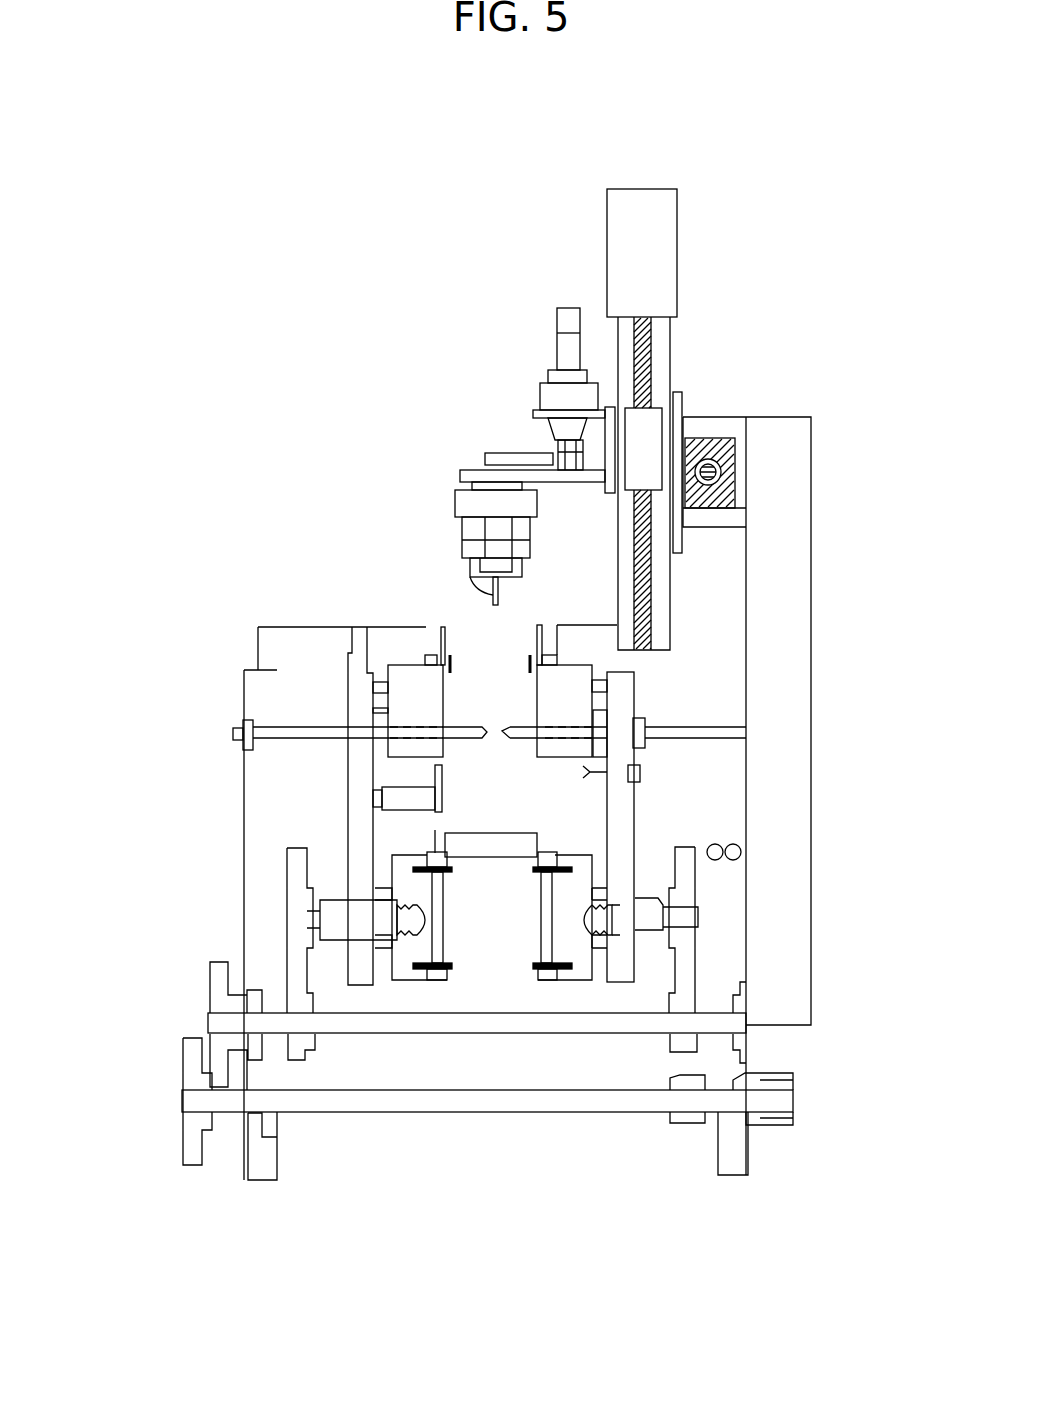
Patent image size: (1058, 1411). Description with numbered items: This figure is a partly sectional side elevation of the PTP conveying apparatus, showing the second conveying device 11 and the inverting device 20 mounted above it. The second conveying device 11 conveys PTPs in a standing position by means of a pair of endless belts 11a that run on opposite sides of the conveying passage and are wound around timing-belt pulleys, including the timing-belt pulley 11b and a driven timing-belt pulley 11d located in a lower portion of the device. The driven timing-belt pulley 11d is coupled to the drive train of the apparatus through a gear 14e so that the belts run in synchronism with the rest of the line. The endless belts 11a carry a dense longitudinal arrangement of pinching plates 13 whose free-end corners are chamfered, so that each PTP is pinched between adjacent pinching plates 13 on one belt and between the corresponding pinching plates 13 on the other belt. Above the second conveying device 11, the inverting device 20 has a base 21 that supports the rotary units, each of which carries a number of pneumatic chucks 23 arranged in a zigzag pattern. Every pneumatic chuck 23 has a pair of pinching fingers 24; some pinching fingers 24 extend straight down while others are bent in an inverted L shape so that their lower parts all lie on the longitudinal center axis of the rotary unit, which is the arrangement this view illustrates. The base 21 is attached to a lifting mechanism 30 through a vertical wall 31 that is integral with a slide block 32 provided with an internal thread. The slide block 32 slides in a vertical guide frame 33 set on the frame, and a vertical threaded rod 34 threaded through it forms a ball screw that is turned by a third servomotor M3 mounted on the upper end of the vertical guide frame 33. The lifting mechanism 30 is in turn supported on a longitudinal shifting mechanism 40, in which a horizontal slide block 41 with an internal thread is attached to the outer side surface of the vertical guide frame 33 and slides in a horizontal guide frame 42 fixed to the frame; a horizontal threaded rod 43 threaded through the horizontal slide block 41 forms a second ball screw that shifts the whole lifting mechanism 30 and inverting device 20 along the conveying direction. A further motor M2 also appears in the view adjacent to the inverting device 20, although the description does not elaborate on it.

The third servomotor M3 is at (658, 213).
The motor M2 is at (553, 397).
The lifting mechanism 30 is at (702, 333).
The vertical wall 31 is at (610, 400).
The slide block 32 is at (652, 422).
The vertical guide frame 33 is at (674, 382).
The vertical threaded rod 34 is at (650, 356).
The longitudinal shifting mechanism 40 is at (746, 452).
The horizontal slide block 41 is at (726, 496).
The horizontal guide frame 42 is at (705, 522).
The horizontal threaded rod 43 is at (714, 469).
The inverting device 20 is at (444, 365).
The base 21 is at (458, 475).
The pneumatic chuck 23 is at (468, 528).
The pinching finger 24 is at (500, 583).
The pinching plate 13 is at (453, 645).
The second conveying device 11 is at (218, 812).
The endless belt 11a is at (422, 658).
The timing-belt pulley 11b is at (408, 689).
The driven timing-belt pulley 11d is at (403, 973).
The gear 14e is at (298, 1050).